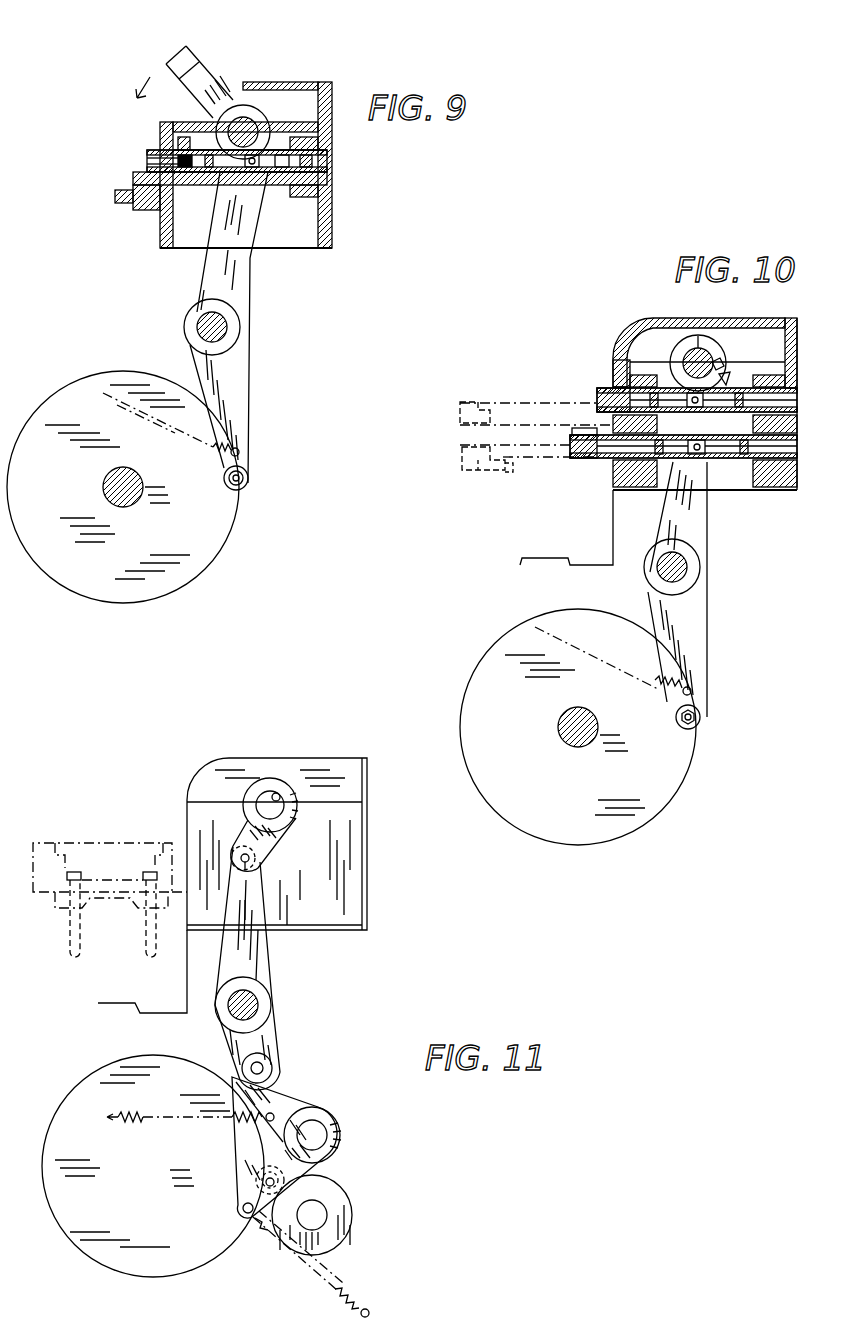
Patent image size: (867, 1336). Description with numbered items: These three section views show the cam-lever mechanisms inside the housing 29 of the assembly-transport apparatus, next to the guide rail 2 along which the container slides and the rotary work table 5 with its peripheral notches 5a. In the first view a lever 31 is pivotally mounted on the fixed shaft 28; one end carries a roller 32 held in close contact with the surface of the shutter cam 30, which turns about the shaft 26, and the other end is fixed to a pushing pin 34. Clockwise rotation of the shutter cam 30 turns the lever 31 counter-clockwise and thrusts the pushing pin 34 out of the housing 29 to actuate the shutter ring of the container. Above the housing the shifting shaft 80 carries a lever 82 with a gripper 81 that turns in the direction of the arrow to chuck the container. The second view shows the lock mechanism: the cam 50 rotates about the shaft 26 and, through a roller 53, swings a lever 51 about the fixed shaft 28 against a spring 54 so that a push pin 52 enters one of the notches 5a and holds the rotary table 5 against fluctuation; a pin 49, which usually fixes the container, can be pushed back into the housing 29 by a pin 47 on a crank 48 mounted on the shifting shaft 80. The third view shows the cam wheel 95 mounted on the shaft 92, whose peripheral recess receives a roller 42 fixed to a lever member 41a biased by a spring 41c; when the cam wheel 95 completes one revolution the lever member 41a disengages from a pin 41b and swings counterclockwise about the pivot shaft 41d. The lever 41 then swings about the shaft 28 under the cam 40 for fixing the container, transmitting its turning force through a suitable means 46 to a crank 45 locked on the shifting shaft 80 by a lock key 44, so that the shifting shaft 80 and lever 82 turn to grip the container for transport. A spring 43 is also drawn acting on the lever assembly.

In FIG. 9, the guide rail 2 is at (118, 188).
In FIG. 10, the guide rail 2 is at (465, 400).
In FIG. 10, the rotary work table 5 is at (480, 471).
In FIG. 10, the peripheral notch 5a is at (508, 473).
In FIG. 9, the shaft 26 is at (113, 488).
In FIG. 10, the shaft 26 is at (560, 727).
In FIG. 9, the fixed shaft 28 is at (222, 327).
In FIG. 10, the fixed shaft 28 is at (683, 565).
In FIG. 11, the fixed shaft 28 is at (252, 1007).
In FIG. 9, the housing 29 is at (327, 140).
In FIG. 10, the housing 29 is at (792, 384).
In FIG. 9, the shutter cam 30 is at (68, 393).
In FIG. 9, the lever 31 is at (212, 273).
In FIG. 9, the roller 32 is at (250, 482).
In FIG. 9, the pushing pin 34 is at (217, 177).
In FIG. 11, the cam 40 is at (68, 1210).
In FIG. 11, the lever 41 is at (255, 950).
In FIG. 11, the lever member 41a is at (288, 1098).
In FIG. 11, the pin 41b is at (263, 1062).
In FIG. 11, the spring 41c is at (343, 1302).
In FIG. 11, the pivot shaft 41d is at (318, 1130).
In FIG. 11, the roller 42 is at (322, 1167).
In FIG. 11, the spring 43 is at (130, 1120).
In FIG. 11, the lock key 44 is at (277, 793).
In FIG. 11, the crank 45 is at (242, 830).
In FIG. 11, the suitable means 46 is at (250, 873).
In FIG. 10, the pin 47 is at (716, 366).
In FIG. 10, the crank 48 is at (724, 380).
In FIG. 10, the pin 49 is at (603, 392).
In FIG. 10, the cam 50 is at (477, 697).
In FIG. 10, the lever 51 is at (688, 645).
In FIG. 10, the push pin 52 is at (602, 460).
In FIG. 10, the roller 53 is at (702, 718).
In FIG. 10, the spring 54 is at (663, 687).
In FIG. 9, the shifting shaft 80 is at (247, 128).
In FIG. 10, the shifting shaft 80 is at (697, 360).
In FIG. 11, the shifting shaft 80 is at (265, 803).
In FIG. 9, the gripper 81 is at (172, 63).
In FIG. 9, the lever 82 is at (213, 92).
In FIG. 11, the shaft 92 is at (318, 1212).
In FIG. 11, the cam wheel 95 is at (338, 1233).